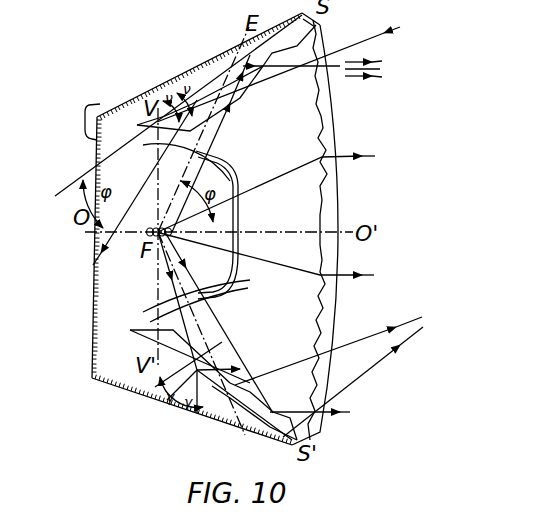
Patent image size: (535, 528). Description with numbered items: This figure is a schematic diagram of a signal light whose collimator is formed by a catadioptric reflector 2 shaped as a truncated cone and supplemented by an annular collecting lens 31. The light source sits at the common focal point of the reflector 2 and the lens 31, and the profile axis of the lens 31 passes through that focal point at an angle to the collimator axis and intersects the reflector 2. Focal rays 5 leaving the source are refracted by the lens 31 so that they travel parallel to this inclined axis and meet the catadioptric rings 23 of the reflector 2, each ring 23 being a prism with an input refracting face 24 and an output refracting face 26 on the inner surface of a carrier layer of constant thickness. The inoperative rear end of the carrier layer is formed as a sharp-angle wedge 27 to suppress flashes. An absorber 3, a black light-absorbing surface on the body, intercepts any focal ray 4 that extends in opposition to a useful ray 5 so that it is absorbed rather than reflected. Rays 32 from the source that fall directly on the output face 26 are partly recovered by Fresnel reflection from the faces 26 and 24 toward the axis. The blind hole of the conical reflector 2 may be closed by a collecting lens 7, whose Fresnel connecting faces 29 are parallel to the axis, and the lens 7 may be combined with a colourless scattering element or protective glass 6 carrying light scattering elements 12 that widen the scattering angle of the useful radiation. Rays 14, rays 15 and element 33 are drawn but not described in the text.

The reflector 2 is at (222, 78).
The absorber 3 is at (85, 116).
The focal ray 4 is at (319, 72).
The focal ray 5 is at (134, 326).
The protective glass 6 is at (334, 106).
The collecting lens 7 is at (334, 212).
The light scattering elements 12 is at (334, 123).
The exit rays 14 is at (278, 210).
The downward exit rays 15 is at (340, 365).
The catadioptric rings 23 is at (253, 53).
The input refracting face 24 is at (262, 438).
The output refracting face 26 is at (259, 404).
The sharp-angle wedge 27 is at (152, 312).
The connecting faces 29 is at (328, 180).
The annular collecting lens 31 is at (147, 150).
The rays of the source 32 is at (326, 415).
The shield 33 is at (240, 277).